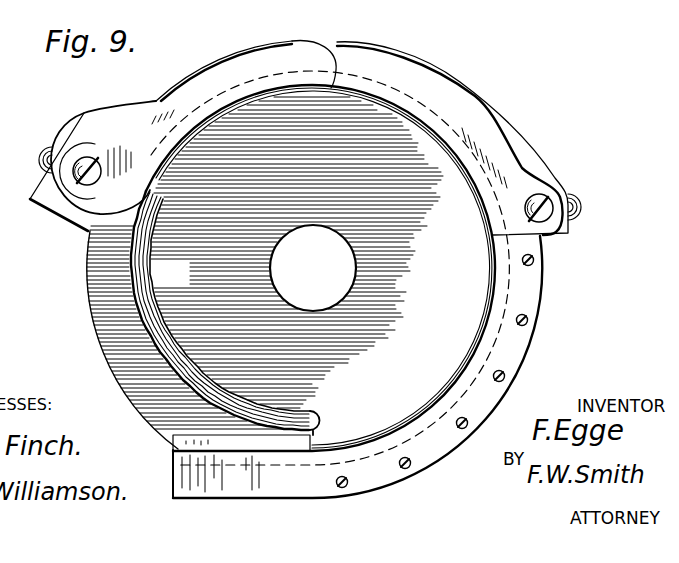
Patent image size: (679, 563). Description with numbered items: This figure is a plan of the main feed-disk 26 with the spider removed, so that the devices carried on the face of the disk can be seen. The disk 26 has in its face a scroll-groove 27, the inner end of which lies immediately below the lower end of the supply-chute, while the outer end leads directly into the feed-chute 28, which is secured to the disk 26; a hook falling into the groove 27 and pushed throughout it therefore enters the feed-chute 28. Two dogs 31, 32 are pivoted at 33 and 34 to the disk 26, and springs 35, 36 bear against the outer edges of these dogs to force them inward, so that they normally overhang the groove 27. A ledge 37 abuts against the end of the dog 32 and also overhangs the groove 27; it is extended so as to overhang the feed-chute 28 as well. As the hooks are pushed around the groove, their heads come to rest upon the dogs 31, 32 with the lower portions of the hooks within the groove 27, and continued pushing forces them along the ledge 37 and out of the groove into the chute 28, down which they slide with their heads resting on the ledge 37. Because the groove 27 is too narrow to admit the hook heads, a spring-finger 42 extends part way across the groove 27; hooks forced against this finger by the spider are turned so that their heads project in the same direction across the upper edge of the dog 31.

The main feed-disk 26 is at (265, 273).
The scroll-groove 27 is at (143, 289).
The feed-chute 28 is at (241, 466).
The dog 31 is at (171, 129).
The dog 32 is at (427, 138).
The pivot 33 is at (93, 164).
The pivot 34 is at (549, 200).
The spring 35 is at (157, 86).
The spring 36 is at (503, 128).
The ledge 37 is at (527, 290).
The spring-finger 42 is at (89, 226).